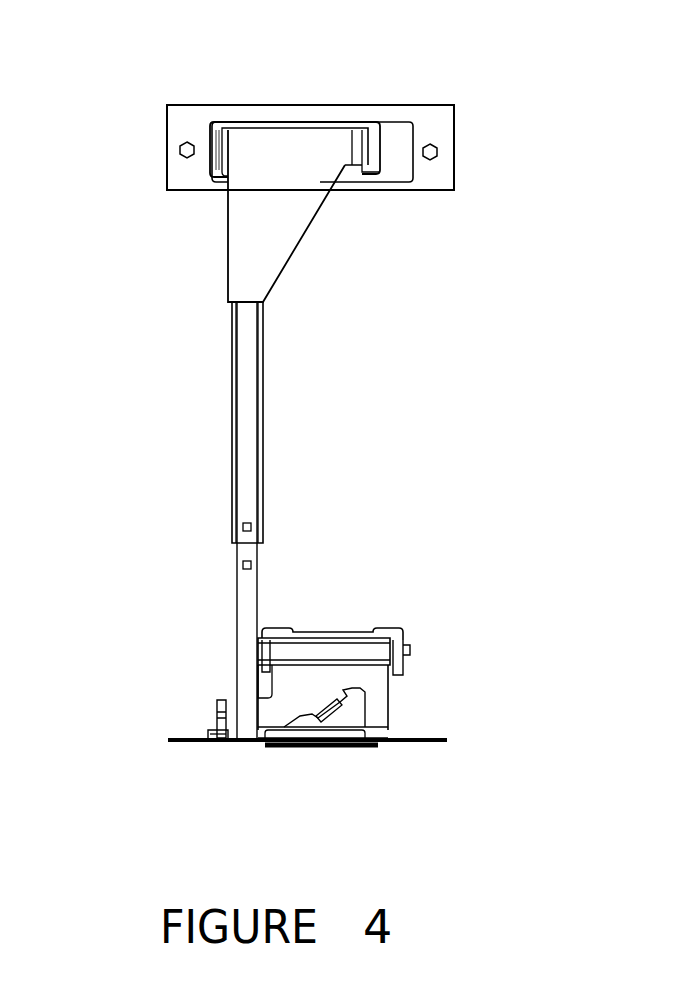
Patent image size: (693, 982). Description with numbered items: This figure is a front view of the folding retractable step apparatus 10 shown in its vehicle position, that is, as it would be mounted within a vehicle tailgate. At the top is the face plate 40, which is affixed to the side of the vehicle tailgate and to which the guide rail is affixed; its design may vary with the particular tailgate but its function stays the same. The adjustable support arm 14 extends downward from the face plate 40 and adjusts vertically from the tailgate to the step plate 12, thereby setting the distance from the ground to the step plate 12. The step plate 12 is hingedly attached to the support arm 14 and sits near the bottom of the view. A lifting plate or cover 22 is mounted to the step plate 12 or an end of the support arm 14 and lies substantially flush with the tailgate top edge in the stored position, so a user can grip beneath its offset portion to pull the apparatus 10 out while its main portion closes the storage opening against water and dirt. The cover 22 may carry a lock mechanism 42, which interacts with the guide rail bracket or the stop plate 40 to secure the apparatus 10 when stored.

The folding retractable step apparatus 10 is at (353, 444).
The step plate 12 is at (340, 628).
The adjustable support arm 14 is at (233, 470).
The lifting plate or cover 22 is at (184, 743).
The face plate 40 is at (167, 135).
The lock mechanism 42 is at (216, 705).